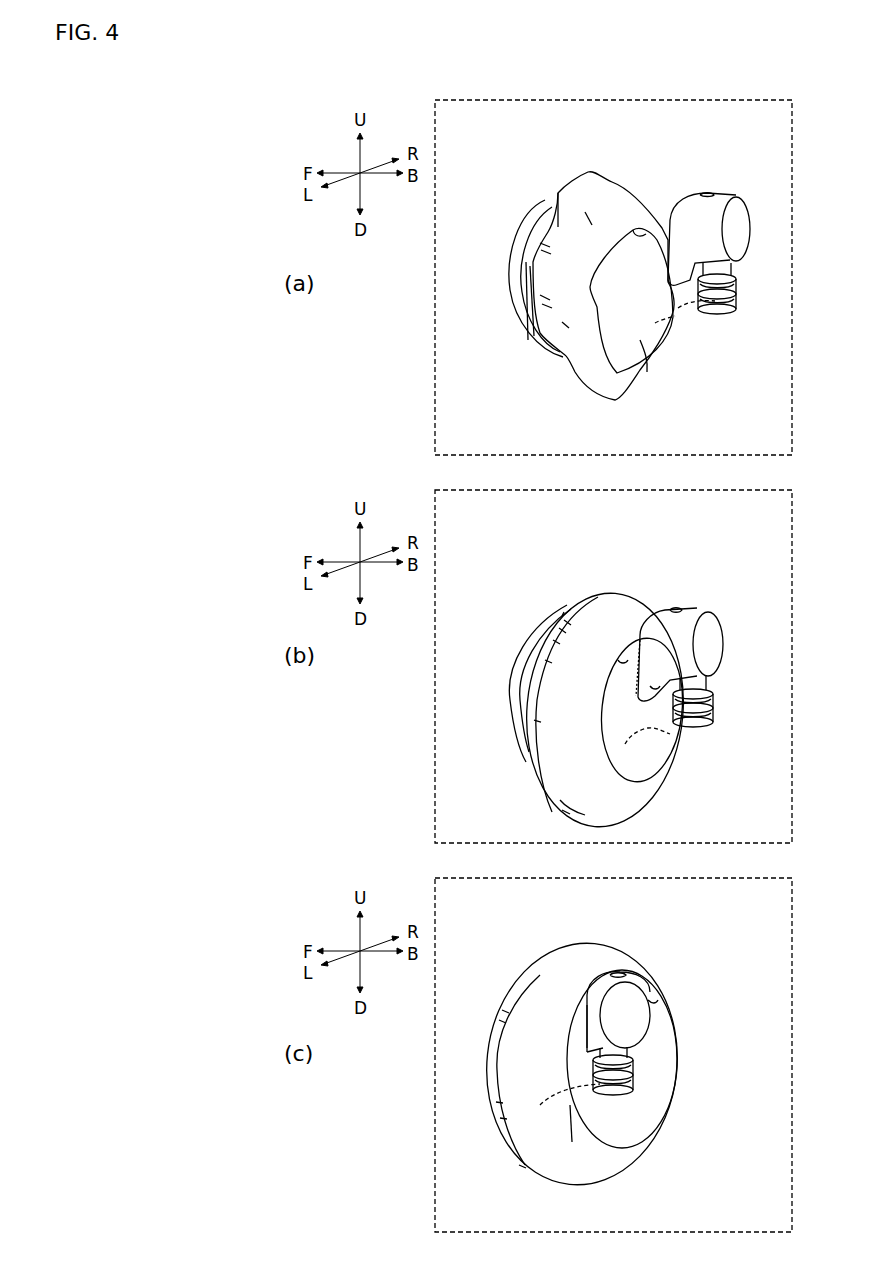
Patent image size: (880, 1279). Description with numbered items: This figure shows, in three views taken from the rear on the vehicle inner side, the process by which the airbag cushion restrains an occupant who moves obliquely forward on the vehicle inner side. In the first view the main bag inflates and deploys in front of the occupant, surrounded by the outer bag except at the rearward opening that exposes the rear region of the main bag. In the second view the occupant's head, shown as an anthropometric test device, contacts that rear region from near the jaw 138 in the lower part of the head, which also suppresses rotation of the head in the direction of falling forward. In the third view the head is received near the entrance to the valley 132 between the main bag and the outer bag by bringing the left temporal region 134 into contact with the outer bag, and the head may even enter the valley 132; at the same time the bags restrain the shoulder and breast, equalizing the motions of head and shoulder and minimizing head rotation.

The valley 132 is at (578, 1015).
The left temporal region 134 is at (582, 1000).
The jaw 138 is at (634, 684).